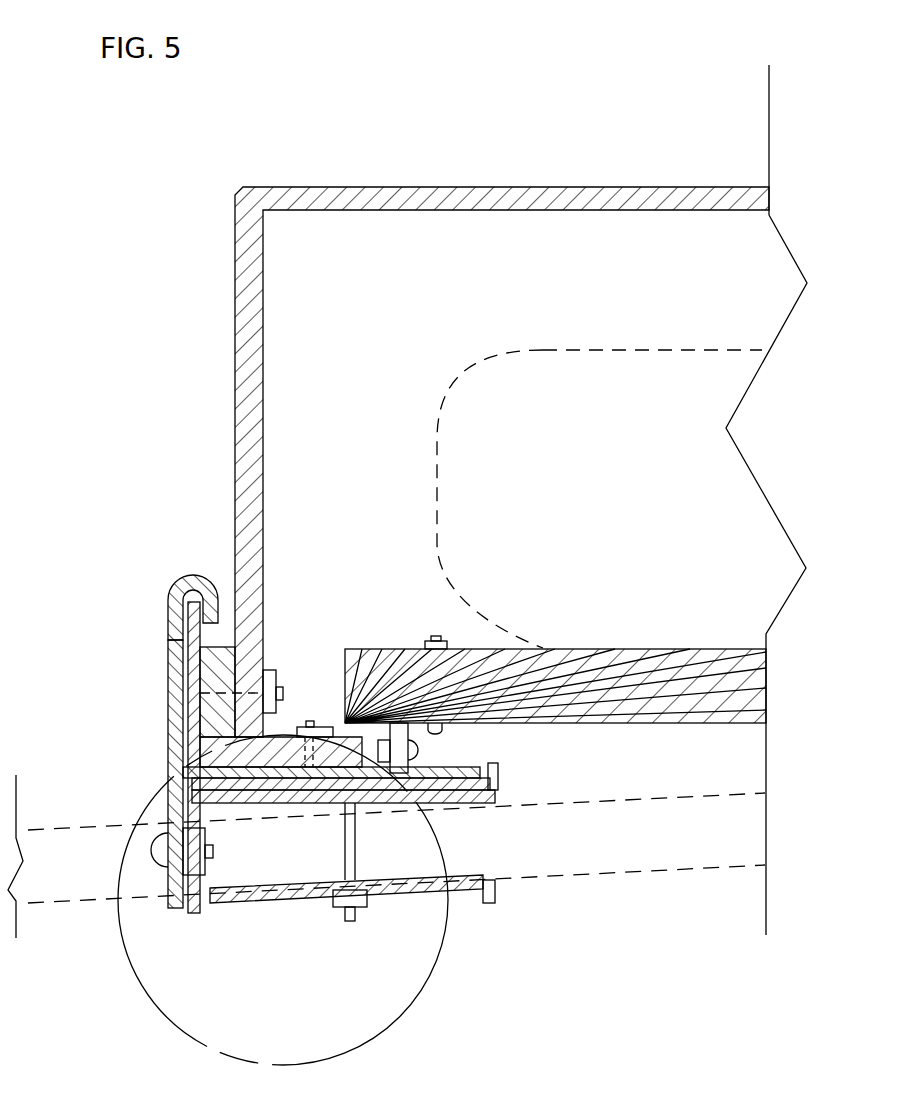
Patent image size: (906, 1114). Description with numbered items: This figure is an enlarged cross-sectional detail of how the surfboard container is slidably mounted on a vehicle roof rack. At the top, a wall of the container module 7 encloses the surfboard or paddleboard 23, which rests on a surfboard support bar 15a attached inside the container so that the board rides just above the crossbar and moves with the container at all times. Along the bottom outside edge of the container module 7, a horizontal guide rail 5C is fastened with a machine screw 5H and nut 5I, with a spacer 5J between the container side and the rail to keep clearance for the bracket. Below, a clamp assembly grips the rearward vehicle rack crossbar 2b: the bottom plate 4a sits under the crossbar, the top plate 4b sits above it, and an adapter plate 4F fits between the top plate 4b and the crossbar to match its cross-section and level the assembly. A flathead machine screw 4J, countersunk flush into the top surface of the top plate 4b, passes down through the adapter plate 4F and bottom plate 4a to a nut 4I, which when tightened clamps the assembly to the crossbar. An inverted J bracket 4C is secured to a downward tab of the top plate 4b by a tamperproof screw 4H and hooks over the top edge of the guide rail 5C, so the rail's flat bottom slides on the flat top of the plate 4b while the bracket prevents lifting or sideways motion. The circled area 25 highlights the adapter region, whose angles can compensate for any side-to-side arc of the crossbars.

The container module 7 is at (535, 187).
The surfboard or paddleboard 23 is at (735, 352).
The surfboard support bar 15a is at (743, 713).
The inverted J bracket 4C is at (168, 590).
The horizontal guide rail 5C is at (188, 622).
The spacer 5J is at (215, 670).
The machine screw 5H is at (200, 693).
The nut 5I is at (295, 727).
The clamp assembly top plate 4b is at (188, 907).
The adapter plate 4F is at (472, 803).
The clamp assembly bottom plate 4a is at (273, 904).
The machine screw 4J is at (352, 921).
The nut 4I is at (362, 907).
The tamperproof screw 4H is at (152, 850).
The rearward vehicle rack crossbar 2b is at (60, 897).
The area defined by line 25 is at (152, 1007).